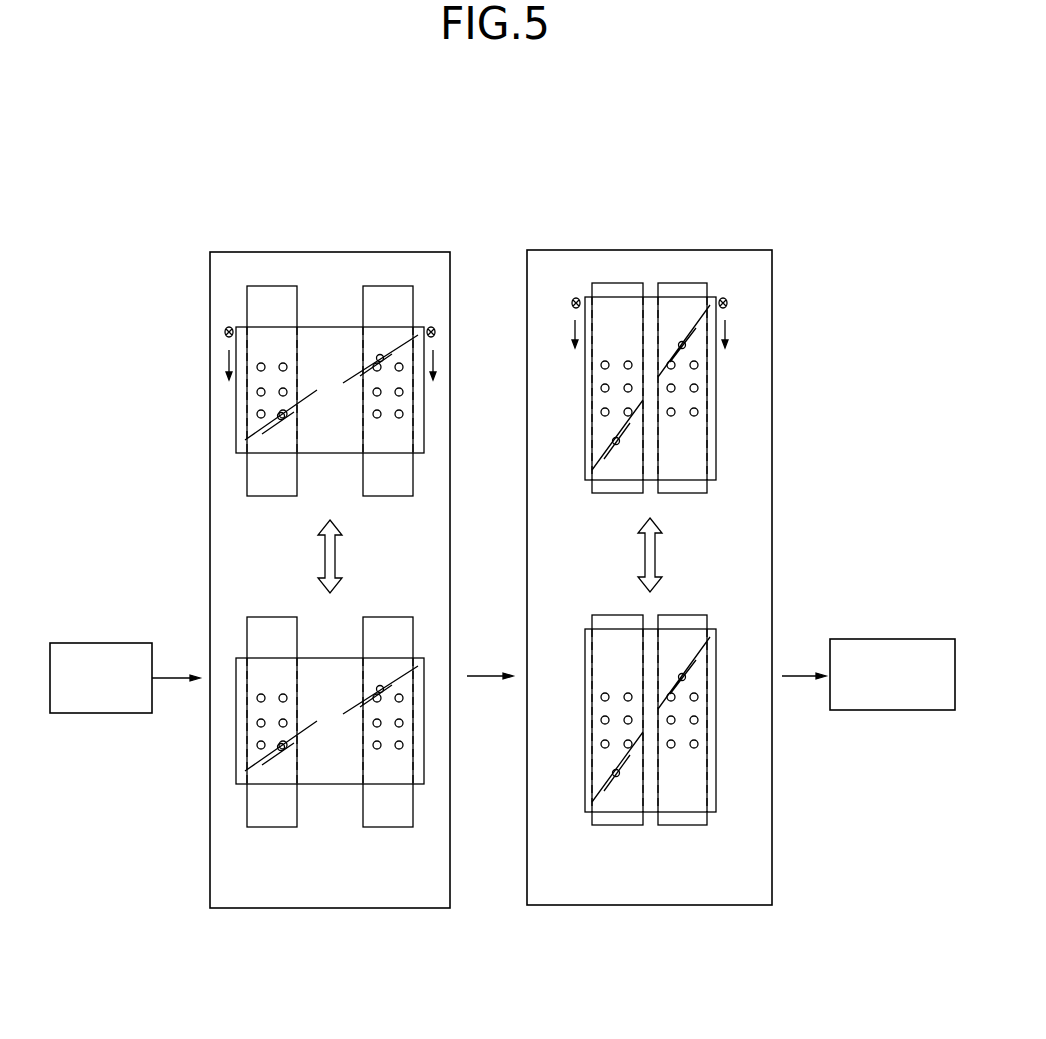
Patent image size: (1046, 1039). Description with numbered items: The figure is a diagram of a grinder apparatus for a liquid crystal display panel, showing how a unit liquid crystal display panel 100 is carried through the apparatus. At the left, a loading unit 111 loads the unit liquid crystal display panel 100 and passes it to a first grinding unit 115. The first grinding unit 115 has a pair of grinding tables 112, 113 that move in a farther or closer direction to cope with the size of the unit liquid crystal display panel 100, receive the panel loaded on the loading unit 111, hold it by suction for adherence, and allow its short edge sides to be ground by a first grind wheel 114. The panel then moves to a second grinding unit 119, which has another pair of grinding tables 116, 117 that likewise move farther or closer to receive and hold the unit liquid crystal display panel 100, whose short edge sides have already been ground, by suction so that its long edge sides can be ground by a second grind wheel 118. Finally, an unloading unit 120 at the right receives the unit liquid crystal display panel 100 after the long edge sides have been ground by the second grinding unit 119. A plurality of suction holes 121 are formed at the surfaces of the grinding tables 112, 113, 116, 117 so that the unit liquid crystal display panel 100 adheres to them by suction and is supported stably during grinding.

The unit liquid crystal display panel 100 is at (328, 455).
The loading unit 111 is at (98, 642).
The grinding table 112 is at (272, 828).
The grinding table 113 is at (387, 828).
The first grind wheel 114 is at (224, 333).
The first grinding unit 115 is at (209, 478).
The grinding table 116 is at (617, 826).
The grinding table 117 is at (682, 826).
The second grind wheel 118 is at (729, 302).
The second grinding unit 119 is at (773, 474).
The unloading unit 120 is at (891, 638).
The suction holes 121 is at (372, 690).